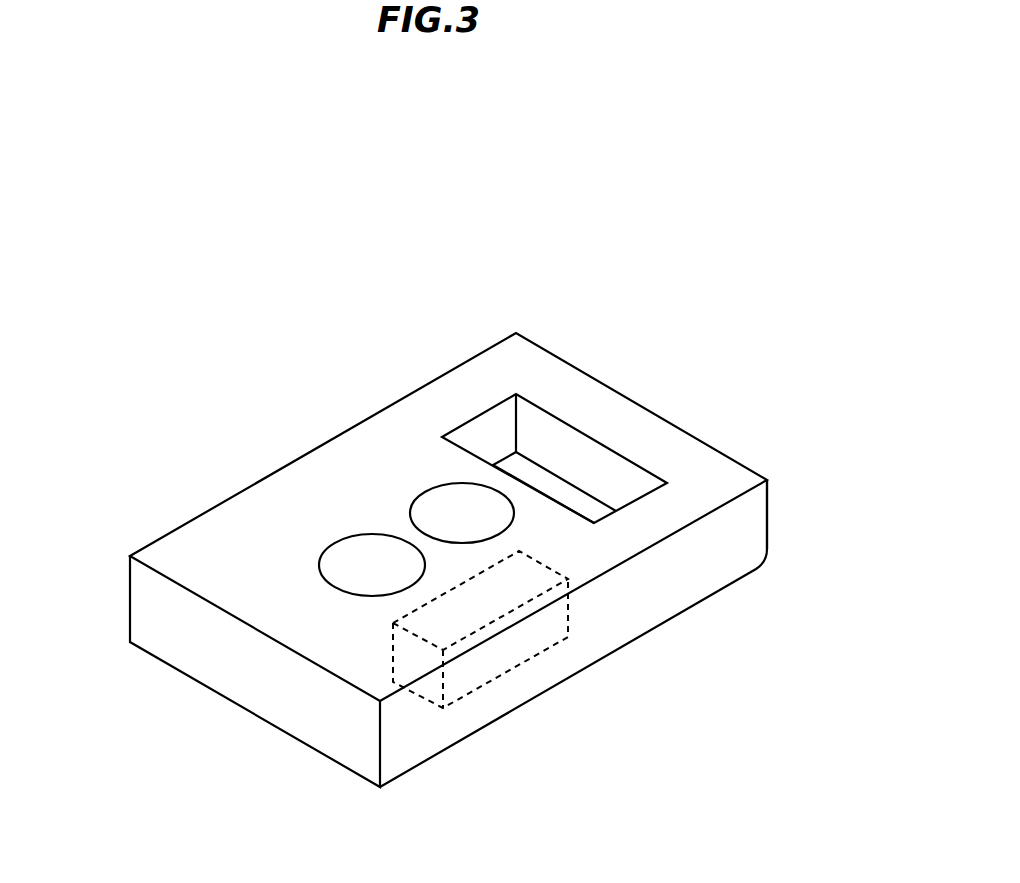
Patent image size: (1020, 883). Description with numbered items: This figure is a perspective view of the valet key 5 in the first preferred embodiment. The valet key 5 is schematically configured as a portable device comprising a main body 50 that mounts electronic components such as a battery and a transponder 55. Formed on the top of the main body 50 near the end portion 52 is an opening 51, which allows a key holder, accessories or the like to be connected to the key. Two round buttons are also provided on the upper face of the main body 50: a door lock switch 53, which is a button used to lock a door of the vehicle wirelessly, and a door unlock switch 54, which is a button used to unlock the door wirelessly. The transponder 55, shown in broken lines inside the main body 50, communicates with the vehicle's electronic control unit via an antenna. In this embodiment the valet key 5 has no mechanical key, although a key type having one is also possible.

The valet key 5 is at (473, 536).
The main body 50 is at (283, 702).
The opening 51 is at (582, 430).
The end portion 52 is at (768, 521).
The door lock switch 53 is at (353, 547).
The door unlock switch 54 is at (438, 487).
The transponder 55 is at (530, 660).